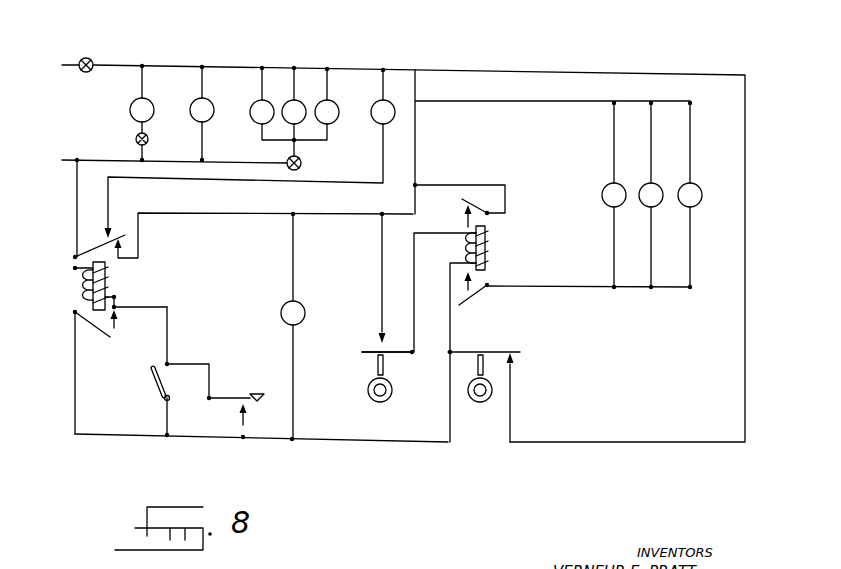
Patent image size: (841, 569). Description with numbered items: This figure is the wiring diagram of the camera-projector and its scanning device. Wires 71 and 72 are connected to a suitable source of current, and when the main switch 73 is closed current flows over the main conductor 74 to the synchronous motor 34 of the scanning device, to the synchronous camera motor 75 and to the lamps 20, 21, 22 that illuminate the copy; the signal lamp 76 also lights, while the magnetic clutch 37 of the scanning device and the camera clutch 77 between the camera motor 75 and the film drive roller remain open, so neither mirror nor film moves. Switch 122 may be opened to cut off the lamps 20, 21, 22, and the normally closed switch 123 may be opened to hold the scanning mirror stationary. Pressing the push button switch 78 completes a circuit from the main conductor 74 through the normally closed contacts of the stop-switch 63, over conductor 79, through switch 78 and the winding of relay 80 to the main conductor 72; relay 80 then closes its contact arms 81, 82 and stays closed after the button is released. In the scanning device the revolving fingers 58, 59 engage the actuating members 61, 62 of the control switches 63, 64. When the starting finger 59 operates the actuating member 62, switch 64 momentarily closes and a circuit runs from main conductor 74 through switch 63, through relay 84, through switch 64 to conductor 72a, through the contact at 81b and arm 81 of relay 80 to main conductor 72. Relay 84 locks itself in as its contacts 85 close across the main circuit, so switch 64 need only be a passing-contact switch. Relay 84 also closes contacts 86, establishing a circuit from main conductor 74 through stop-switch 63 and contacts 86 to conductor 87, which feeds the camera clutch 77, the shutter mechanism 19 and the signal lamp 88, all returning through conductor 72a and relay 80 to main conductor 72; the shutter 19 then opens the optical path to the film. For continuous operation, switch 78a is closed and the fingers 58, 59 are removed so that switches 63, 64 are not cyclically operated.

The wire 71 is at (57, 65).
The main switch 73 is at (92, 58).
The main conductor 74 is at (363, 69).
The main conductor 72 is at (165, 189).
The conductor 72a is at (404, 164).
The synchronous motor 34 is at (142, 98).
The normally closed switch 123 is at (148, 139).
The camera motor 75 is at (202, 93).
The lamp 20 is at (272, 103).
The lamp 21 is at (294, 111).
The lamp 22 is at (316, 103).
The switch 122 is at (302, 163).
The signal lamp 76 is at (251, 148).
The camera clutch 77 is at (614, 195).
The shutter mechanism 19 is at (651, 195).
The signal lamp 88 is at (690, 195).
The conductor 87 is at (588, 296).
The relay contacts 85 is at (466, 213).
The relay 84 is at (436, 334).
The relay contacts 86 is at (474, 299).
The contact arm 81 is at (99, 243).
The relay contact 81b is at (128, 245).
The relay 80 is at (112, 286).
The contact arm 82 is at (96, 372).
The switch 78a is at (191, 372).
The push button switch 78 is at (252, 407).
The conductor 79 is at (261, 436).
The magnetic clutch 37 is at (293, 327).
The control switch 64 is at (369, 278).
The actuating member 62 is at (376, 365).
The starting finger 59 is at (375, 401).
The stop-switch 63 is at (486, 389).
The actuating member 61 is at (477, 360).
The finger 58 is at (476, 401).